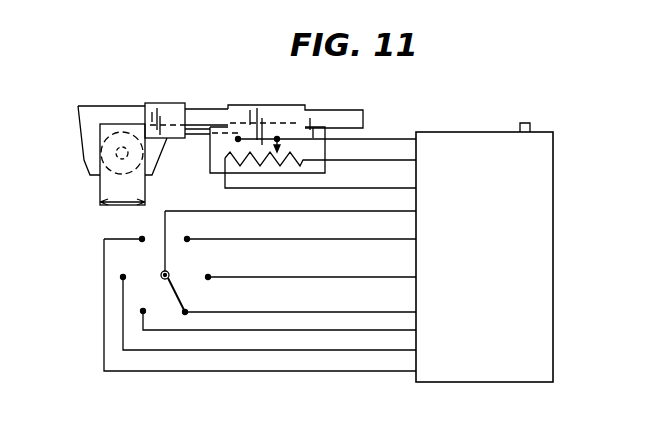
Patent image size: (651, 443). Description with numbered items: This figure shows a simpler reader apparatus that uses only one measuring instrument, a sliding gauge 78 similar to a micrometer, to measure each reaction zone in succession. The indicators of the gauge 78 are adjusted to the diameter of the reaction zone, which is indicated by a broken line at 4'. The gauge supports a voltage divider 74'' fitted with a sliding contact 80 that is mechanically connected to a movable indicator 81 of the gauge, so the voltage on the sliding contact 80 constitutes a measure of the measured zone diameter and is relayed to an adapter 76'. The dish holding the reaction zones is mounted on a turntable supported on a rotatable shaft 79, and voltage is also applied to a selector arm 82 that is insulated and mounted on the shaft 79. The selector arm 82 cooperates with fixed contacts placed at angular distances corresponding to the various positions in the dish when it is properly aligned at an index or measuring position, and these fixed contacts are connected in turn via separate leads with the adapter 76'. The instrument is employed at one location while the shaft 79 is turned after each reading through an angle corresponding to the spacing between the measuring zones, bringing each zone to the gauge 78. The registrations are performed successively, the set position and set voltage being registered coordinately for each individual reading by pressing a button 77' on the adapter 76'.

The sliding gauge 78 is at (127, 97).
The movable indicator 81 is at (172, 110).
The sliding contact 80 is at (270, 133).
The voltage divider 74'' is at (290, 230).
The button 77' is at (536, 102).
The adapter 76' is at (515, 257).
The rotatable shaft 79 is at (161, 272).
The selector arm 82 is at (177, 298).
The reaction zone 4' is at (90, 178).